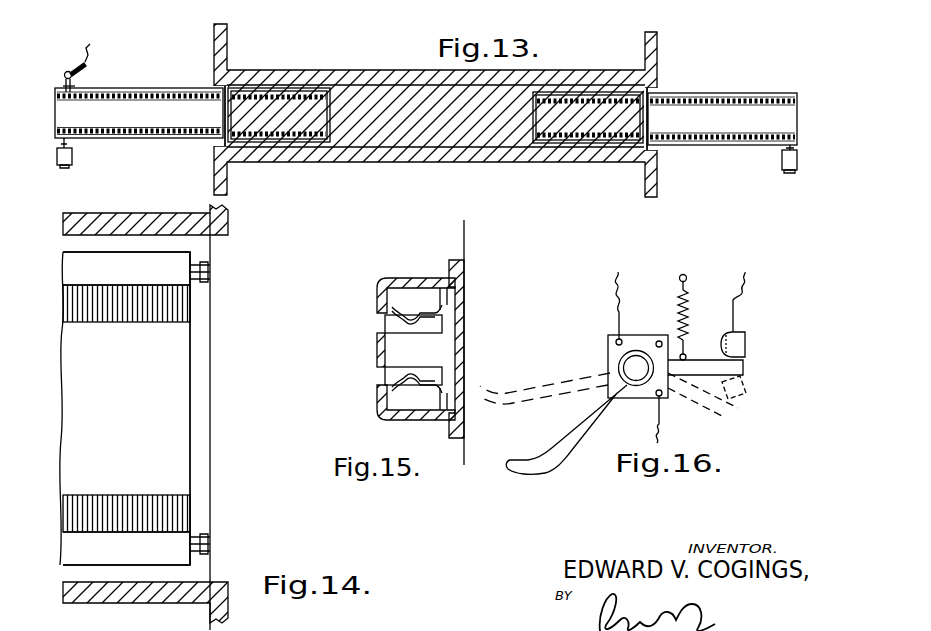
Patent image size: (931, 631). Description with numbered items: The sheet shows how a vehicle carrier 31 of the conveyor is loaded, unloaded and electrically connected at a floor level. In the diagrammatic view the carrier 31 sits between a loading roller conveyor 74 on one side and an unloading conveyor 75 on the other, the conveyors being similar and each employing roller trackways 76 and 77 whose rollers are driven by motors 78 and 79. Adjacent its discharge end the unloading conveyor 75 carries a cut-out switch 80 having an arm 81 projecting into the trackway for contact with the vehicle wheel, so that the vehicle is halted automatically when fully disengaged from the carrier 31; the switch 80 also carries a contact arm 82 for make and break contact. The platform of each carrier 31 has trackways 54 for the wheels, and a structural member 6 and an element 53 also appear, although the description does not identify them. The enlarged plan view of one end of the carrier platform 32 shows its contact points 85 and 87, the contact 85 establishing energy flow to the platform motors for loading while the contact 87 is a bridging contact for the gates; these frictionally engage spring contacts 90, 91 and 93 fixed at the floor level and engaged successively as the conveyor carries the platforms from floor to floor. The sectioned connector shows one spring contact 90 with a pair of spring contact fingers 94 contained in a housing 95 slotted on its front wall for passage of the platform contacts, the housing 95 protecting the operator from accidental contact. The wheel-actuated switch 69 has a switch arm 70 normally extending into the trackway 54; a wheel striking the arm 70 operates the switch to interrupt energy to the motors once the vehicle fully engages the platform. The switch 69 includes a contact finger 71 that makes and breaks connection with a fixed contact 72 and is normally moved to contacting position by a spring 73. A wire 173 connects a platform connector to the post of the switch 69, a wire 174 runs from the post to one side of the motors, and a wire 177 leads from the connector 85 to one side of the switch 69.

In FIG. 13, the wall 6 is at (426, 86).
In FIG. 14, the wall 6 is at (106, 228).
In FIG. 13, the carrier 31 is at (333, 117).
In FIG. 14, the carrier 31 is at (200, 359).
In FIG. 14, the carrier platform 32 is at (125, 408).
In FIG. 14, the filler strip 53 is at (101, 314).
In FIG. 13, the trackway 54 is at (288, 133).
In FIG. 16, the electrical switch 69 is at (618, 364).
In FIG. 16, the switch arm 70 is at (558, 451).
In FIG. 16, the contact finger 71 is at (696, 360).
In FIG. 16, the fixed contact 72 is at (742, 335).
In FIG. 16, the spring 73 is at (682, 303).
In FIG. 13, the loading roller conveyor 74 is at (700, 115).
In FIG. 13, the unloading conveyor 75 is at (125, 108).
In FIG. 13, the roller trackway 76 is at (737, 135).
In FIG. 13, the roller trackway 77 is at (160, 130).
In FIG. 13, the motor 78 is at (780, 163).
In FIG. 13, the motor 79 is at (72, 158).
In FIG. 13, the cut-out switch 80 is at (66, 71).
In FIG. 13, the arm 81 is at (78, 85).
In FIG. 13, the contact arm 82 is at (86, 53).
In FIG. 14, the contact point 85 is at (190, 266).
In FIG. 14, the contact point 87 is at (190, 545).
In FIG. 15, the spring contact 90 is at (377, 349).
In FIG. 14, the spring contact 91 is at (210, 272).
In FIG. 14, the spring contact 93 is at (210, 545).
In FIG. 15, the spring contact finger 94 is at (408, 380).
In FIG. 15, the housing 95 is at (397, 280).
In FIG. 16, the wire 173 is at (619, 318).
In FIG. 16, the wire 174 is at (660, 429).
In FIG. 16, the wire 177 is at (740, 310).